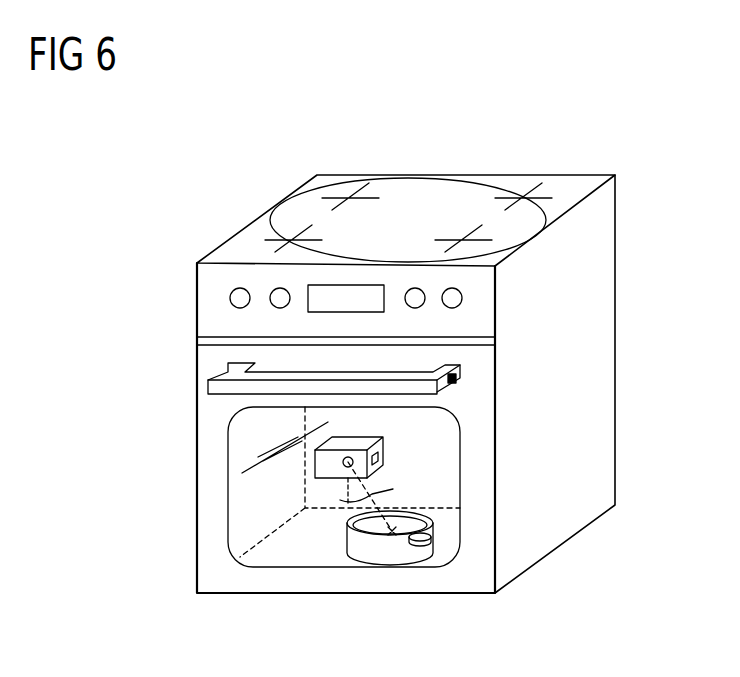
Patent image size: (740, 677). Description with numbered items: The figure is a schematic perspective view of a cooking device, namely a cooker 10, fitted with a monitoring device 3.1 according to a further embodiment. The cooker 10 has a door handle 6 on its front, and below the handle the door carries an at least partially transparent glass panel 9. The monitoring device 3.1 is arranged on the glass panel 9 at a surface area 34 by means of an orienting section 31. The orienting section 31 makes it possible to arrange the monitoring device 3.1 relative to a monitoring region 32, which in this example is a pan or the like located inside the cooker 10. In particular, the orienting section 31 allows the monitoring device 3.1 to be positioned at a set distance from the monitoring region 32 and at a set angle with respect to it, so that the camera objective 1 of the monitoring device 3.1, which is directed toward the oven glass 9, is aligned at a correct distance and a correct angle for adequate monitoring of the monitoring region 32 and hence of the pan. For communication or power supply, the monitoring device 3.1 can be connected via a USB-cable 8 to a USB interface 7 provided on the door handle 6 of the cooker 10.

The camera objective 1 is at (332, 437).
The monitoring device 3.1 is at (315, 462).
The door handle 6 is at (228, 366).
The USB interface 7 is at (460, 372).
The USB-cable 8 is at (335, 437).
The glass panel 9 is at (245, 520).
The cooker 10 is at (592, 342).
The orienting section 31 is at (380, 458).
The monitoring region 32 is at (378, 546).
The surface area 34 is at (322, 483).